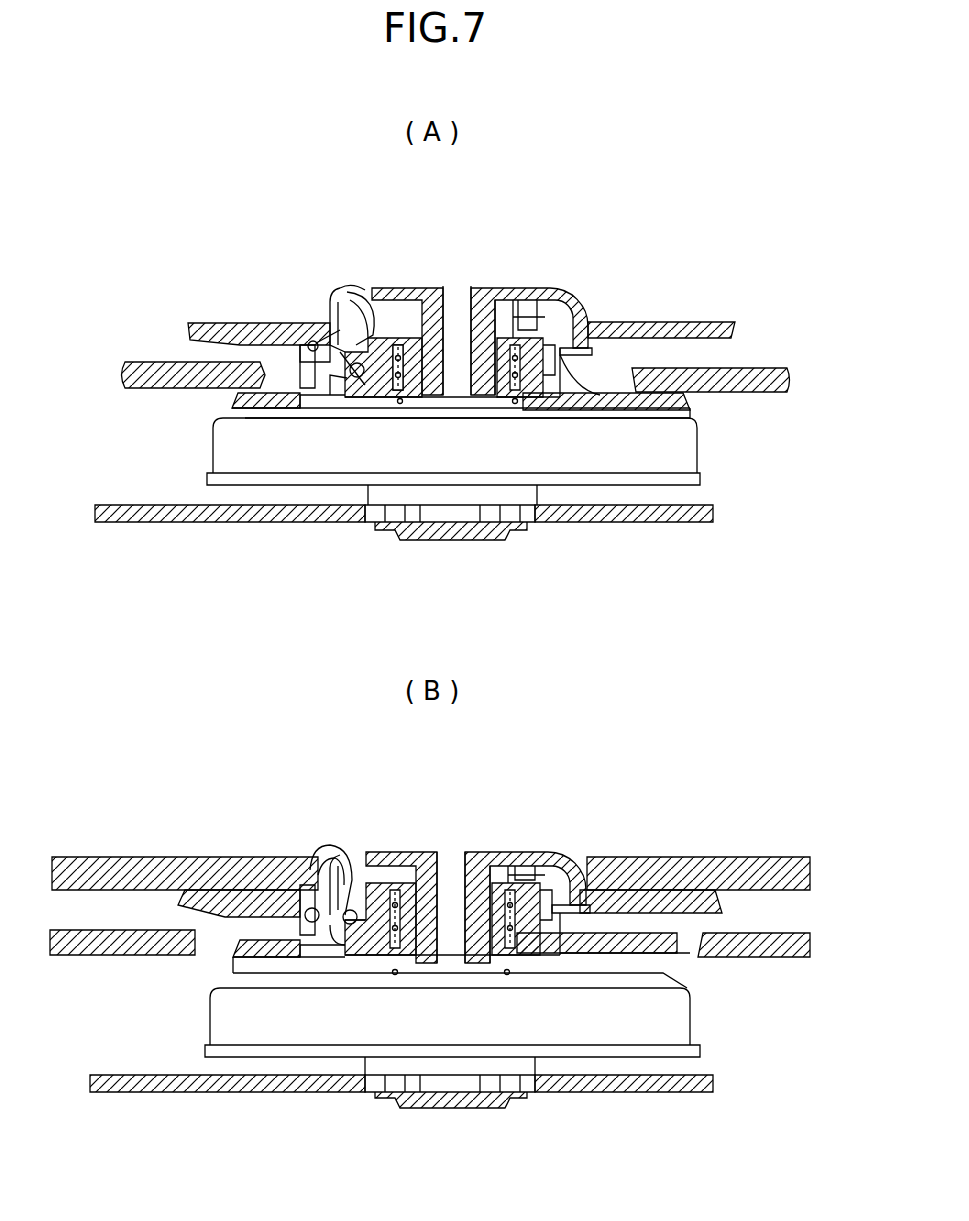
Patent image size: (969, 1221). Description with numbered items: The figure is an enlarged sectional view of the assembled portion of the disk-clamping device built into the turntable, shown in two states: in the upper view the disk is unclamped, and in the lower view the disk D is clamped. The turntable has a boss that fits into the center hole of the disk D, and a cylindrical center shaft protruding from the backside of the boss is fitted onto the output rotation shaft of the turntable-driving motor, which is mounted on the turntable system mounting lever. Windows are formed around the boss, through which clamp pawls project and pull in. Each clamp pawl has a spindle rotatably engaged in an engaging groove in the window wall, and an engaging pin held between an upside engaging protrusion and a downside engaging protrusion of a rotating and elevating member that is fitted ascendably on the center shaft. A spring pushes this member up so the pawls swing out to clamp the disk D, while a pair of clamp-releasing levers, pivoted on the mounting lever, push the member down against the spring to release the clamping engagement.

The disk D is at (215, 855).